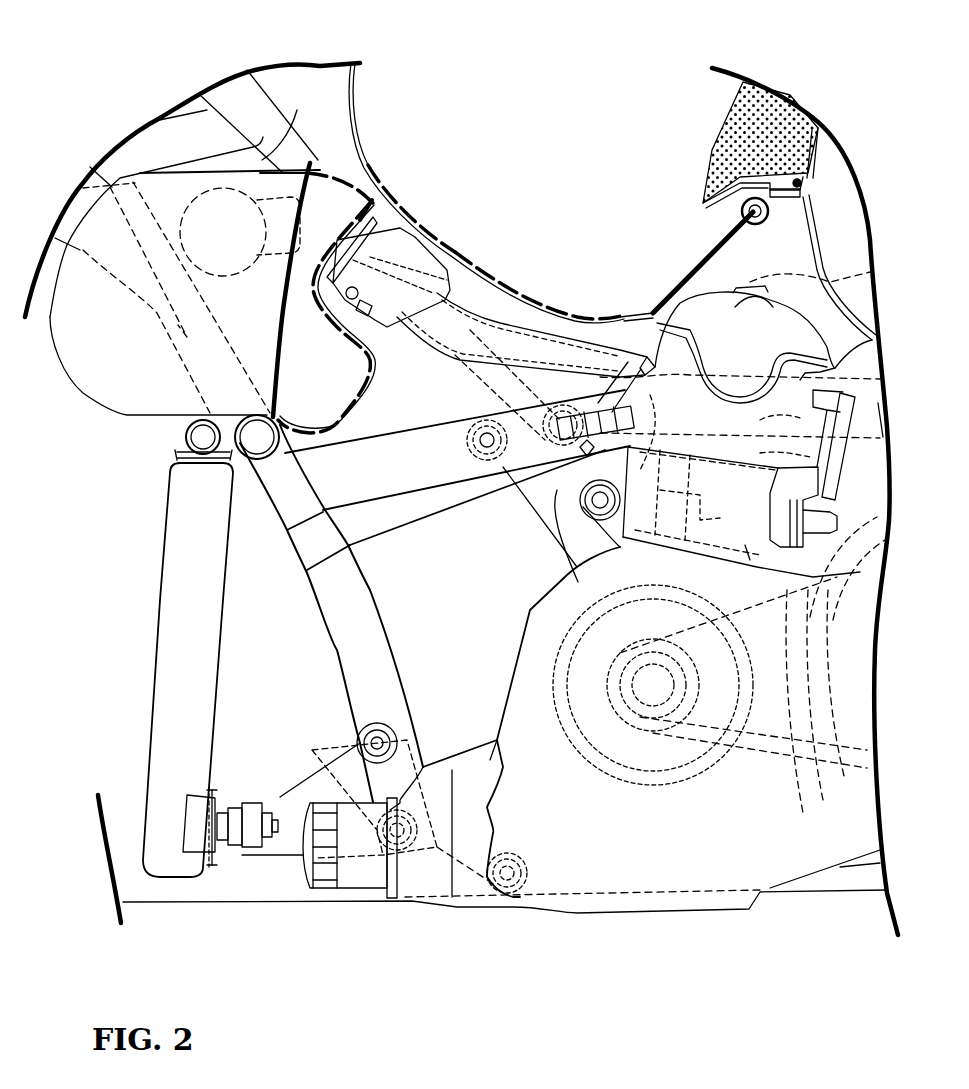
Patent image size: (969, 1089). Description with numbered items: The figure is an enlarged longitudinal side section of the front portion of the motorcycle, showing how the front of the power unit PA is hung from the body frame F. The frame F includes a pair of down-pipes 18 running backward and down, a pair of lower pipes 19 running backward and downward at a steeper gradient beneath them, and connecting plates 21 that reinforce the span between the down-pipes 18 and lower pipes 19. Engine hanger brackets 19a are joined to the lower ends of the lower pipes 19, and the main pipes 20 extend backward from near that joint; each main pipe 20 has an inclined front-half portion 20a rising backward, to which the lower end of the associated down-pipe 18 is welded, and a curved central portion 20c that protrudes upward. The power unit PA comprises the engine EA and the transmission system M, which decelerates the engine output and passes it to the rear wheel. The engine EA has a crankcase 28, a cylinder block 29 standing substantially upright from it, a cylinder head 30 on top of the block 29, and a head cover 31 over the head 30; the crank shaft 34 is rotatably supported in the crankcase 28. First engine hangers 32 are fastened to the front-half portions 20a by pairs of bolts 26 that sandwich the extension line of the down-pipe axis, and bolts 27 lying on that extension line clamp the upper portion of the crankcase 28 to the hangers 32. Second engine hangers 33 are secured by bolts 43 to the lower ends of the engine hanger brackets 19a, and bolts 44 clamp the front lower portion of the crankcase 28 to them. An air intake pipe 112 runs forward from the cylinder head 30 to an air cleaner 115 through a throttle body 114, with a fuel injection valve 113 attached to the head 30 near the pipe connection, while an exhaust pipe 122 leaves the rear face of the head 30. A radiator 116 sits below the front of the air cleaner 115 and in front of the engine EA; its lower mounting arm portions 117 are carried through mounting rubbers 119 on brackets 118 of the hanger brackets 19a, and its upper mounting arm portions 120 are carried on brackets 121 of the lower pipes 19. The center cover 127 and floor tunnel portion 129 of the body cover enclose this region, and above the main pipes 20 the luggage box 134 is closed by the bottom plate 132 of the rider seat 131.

The down-pipes 18 is at (252, 98).
The connecting plates 21 is at (158, 140).
The air cleaner 115 is at (298, 118).
The center cover 127 is at (355, 83).
The floor tunnel portion 129 is at (527, 297).
The body frame F is at (320, 135).
The rider seat 131 is at (733, 117).
The bottom plate 132 is at (792, 100).
The curved central portion 20c is at (722, 373).
The cylinder head 30 is at (667, 347).
The engine EA is at (634, 346).
The head cover 31 is at (735, 307).
The luggage box 134 is at (797, 270).
The bolts 26 is at (540, 367).
The throttle body 114 is at (430, 255).
The inclined front-half portion 20a is at (337, 427).
The main pipes 20 is at (528, 473).
The air intake pipe 112 is at (477, 367).
The bolts 27 is at (594, 508).
The first engine hangers 32 is at (561, 535).
The fuel injection valve 113 is at (740, 464).
The cylinder block 29 is at (745, 545).
The exhaust pipe 122 is at (867, 455).
The lower pipes 19 is at (277, 500).
The engine hanger brackets 19a is at (377, 620).
The radiator 116 is at (160, 763).
The mounting arm portions 120 is at (187, 453).
The brackets 121 is at (193, 420).
The crankcase 28 is at (520, 677).
The crank shaft 34 is at (637, 713).
The transmission system M is at (788, 764).
The power unit PA is at (636, 914).
The bolts 43 is at (358, 745).
The brackets 118 is at (280, 810).
The mounting arm portions 117 is at (217, 850).
The mounting rubbers 119 is at (245, 852).
The second engine hangers 33 is at (473, 830).
The bolts 44 is at (520, 863).